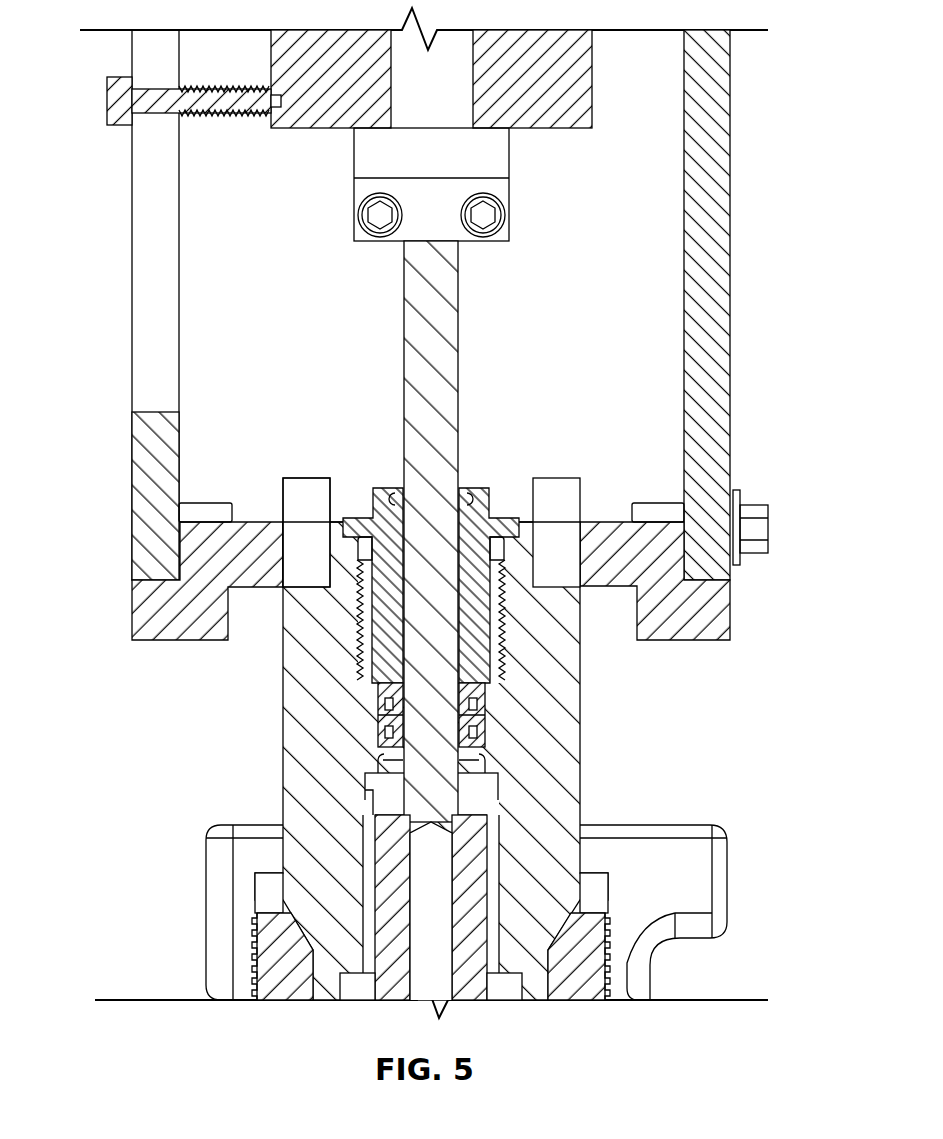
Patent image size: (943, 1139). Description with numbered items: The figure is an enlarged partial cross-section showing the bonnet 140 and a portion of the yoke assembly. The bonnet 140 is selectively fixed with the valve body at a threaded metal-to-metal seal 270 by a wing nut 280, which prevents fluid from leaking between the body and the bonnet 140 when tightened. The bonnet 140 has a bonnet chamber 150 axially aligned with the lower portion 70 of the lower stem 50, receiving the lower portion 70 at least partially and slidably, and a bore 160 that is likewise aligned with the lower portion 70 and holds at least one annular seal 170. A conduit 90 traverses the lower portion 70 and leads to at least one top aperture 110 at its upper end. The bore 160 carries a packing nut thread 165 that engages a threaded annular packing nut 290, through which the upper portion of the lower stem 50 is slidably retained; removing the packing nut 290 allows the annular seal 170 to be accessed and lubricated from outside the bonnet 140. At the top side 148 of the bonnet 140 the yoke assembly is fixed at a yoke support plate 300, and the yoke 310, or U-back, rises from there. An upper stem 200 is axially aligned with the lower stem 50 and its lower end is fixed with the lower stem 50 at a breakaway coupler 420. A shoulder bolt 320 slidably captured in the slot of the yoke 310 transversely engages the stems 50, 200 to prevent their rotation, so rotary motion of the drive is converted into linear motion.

The lower stem 50 is at (447, 357).
The lower portion 70 is at (363, 853).
The conduit 90 is at (440, 880).
The top aperture 110 is at (365, 790).
The bonnet 140 is at (562, 777).
The top side 148 is at (283, 600).
The bonnet chamber 150 is at (487, 770).
The bore 160 is at (388, 803).
The packing nut thread 165 is at (357, 622).
The annular seal 170 is at (380, 697).
The upper stem 200 is at (509, 150).
The metal-to-metal seal 270 is at (580, 935).
The wing nut 280 is at (720, 862).
The packing nut 290 is at (462, 487).
The yoke support plate 300 is at (140, 617).
The yoke 310 is at (138, 492).
The shoulder bolt 320 is at (240, 113).
The breakaway coupler 420 is at (509, 207).